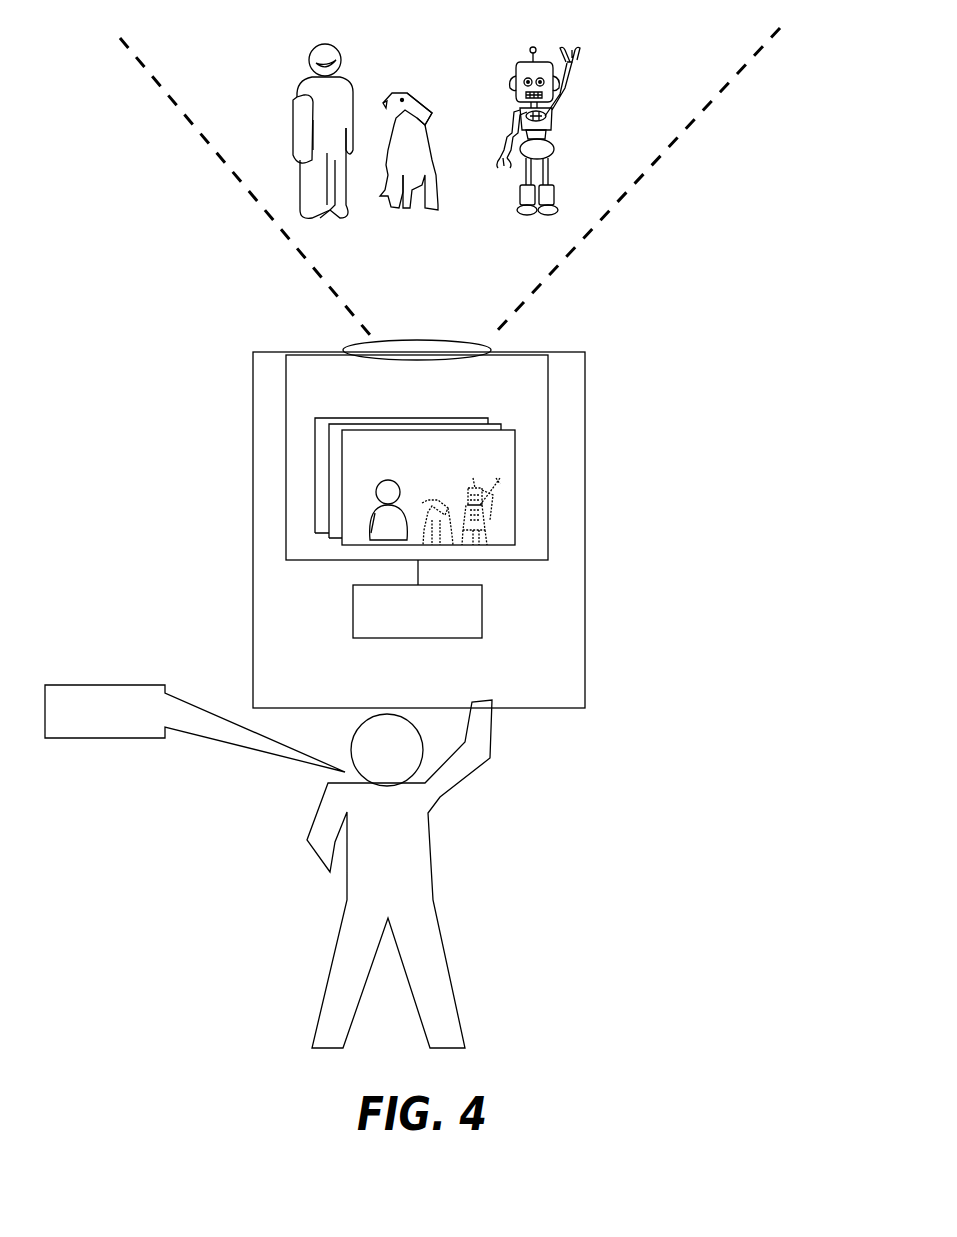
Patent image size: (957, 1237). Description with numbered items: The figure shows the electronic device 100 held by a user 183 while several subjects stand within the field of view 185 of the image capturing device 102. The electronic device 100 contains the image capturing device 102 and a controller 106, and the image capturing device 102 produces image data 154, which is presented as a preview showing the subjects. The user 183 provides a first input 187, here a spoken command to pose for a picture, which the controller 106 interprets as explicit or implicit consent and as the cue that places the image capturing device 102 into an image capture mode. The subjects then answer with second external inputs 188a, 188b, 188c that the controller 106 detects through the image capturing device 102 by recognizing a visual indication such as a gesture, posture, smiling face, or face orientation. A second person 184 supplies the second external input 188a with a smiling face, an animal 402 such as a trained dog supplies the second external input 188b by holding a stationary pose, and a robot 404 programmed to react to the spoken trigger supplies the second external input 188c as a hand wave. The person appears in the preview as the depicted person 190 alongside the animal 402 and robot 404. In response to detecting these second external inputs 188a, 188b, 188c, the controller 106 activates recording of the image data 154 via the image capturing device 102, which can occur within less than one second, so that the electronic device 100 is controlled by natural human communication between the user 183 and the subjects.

The electronic device 100 is at (432, 701).
The image capturing device 102 is at (432, 401).
The controller 106 is at (432, 631).
The image data 154 is at (503, 456).
The user 183 is at (445, 953).
The person 184 is at (293, 133).
The field of view 185 is at (506, 315).
The voice command 187 is at (120, 687).
The person target 188a is at (343, 66).
The dog target 188b is at (437, 173).
The robot target 188c is at (582, 73).
The person in image data 190 is at (386, 527).
The animal 402 is at (428, 138).
The robot 404 is at (558, 145).